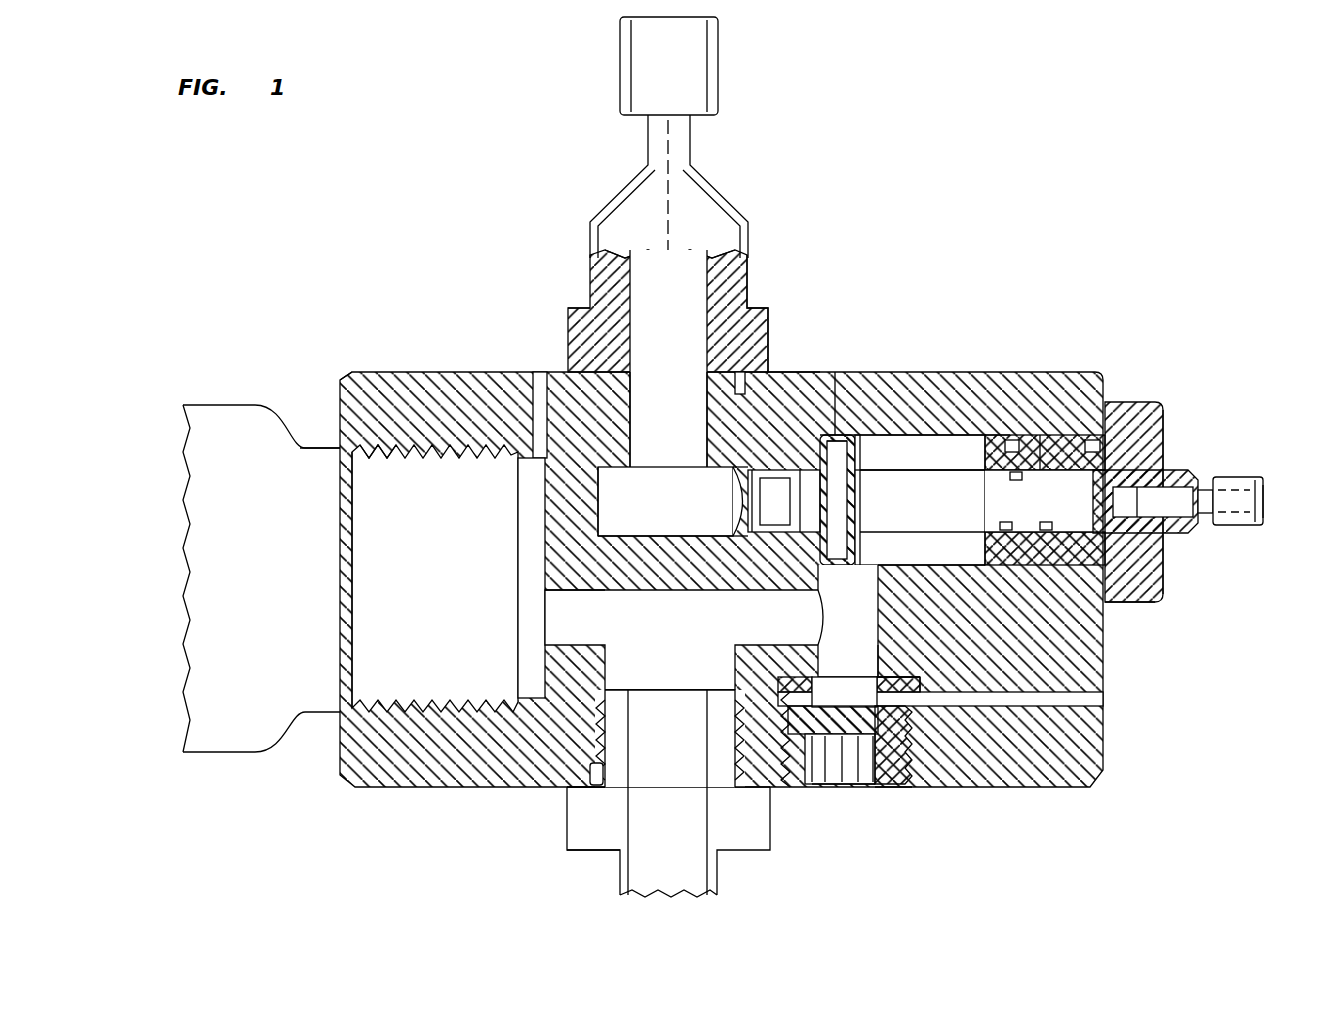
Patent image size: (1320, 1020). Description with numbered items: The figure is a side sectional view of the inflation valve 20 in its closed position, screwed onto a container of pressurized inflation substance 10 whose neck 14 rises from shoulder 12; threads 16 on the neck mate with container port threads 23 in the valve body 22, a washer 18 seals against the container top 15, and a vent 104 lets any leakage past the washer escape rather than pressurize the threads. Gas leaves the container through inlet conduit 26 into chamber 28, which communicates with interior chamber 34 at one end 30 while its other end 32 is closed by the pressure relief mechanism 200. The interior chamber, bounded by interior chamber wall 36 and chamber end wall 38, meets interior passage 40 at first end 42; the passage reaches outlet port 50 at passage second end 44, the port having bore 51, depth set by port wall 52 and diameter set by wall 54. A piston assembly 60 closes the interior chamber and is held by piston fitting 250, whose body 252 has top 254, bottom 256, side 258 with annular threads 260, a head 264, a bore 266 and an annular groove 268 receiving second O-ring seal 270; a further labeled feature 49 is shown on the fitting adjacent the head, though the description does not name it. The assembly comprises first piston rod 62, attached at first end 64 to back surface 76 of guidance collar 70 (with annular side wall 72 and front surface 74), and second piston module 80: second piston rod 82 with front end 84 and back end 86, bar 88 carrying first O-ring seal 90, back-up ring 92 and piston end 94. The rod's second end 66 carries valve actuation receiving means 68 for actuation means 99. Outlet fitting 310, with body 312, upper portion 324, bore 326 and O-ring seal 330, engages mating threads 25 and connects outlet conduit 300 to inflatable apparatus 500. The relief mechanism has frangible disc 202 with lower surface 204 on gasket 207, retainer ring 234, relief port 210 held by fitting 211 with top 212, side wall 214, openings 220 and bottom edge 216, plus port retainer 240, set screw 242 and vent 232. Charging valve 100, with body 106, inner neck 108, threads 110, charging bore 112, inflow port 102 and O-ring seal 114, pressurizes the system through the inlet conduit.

The container of pressurized inflation substance 10 is at (203, 410).
The shoulder 12 is at (268, 405).
The neck 14 is at (318, 448).
The container top 15 is at (518, 520).
The threads 16 is at (384, 458).
The washer 18 is at (520, 492).
The inflation valve 20 is at (470, 248).
The valve body 22 is at (457, 372).
The container port threads 23 is at (428, 458).
The mating threads 25 is at (600, 702).
The inlet conduit 26 is at (548, 620).
The chamber 28 is at (890, 594).
The end of chamber 30 is at (862, 582).
The other end of chamber 32 is at (880, 665).
The interior chamber 34 is at (927, 435).
The interior chamber wall 36 is at (955, 428).
The chamber end wall 38 is at (845, 432).
The interior passage 40 is at (745, 522).
The first end 42 is at (830, 436).
The passage second end 44 is at (738, 500).
The fitting shoulder 49 is at (1108, 442).
The outlet port 50 is at (650, 466).
The outlet port bore 51 is at (598, 498).
The port wall 52 is at (638, 534).
The wall 54 is at (598, 534).
The piston assembly 60 is at (905, 438).
The first piston rod 62 is at (945, 485).
The first end 64 is at (862, 440).
The first piston rod second end 66 is at (1200, 525).
The valve actuation receiving means 68 is at (1228, 477).
The guidance collar 70 is at (858, 505).
The annular side wall 72 is at (837, 500).
The front surface 74 is at (837, 459).
The back surface 76 is at (858, 488).
The second piston module 80 is at (792, 425).
The second piston rod 82 is at (812, 422).
The front end 84 is at (770, 533).
The back end 86 is at (808, 585).
The bar 88 is at (786, 475).
The first O-ring seal 90 is at (775, 501).
The back-up ring 92 is at (765, 470).
The piston end 94 is at (736, 520).
The inflation valve actuation means 99 is at (1265, 492).
The charging valve 100 is at (562, 868).
The inflow port 102 is at (625, 644).
The vent 104 is at (540, 385).
The body 106 is at (595, 852).
The inner neck 108 is at (605, 730).
The threads 110 is at (585, 762).
The charging bore 112 is at (667, 792).
The O-ring seal 114 is at (597, 788).
The pressure relief mechanism 200 is at (915, 795).
The frangible disc 202 is at (920, 696).
The lower surface 204 is at (922, 684).
The gasket 207 is at (905, 642).
The relief port 210 is at (838, 690).
The fitting 211 is at (795, 760).
The top 212 is at (890, 790).
The side wall 214 is at (914, 742).
The bottom edge 216 is at (866, 790).
The openings 220 is at (855, 678).
The vent 232 is at (1050, 708).
The retainer ring 234 is at (790, 684).
The port retainer 240 is at (775, 695).
The set screw 242 is at (840, 772).
The piston fitting 250 is at (1165, 396).
The body 252 is at (1130, 402).
The top 254 is at (1164, 426).
The bottom 256 is at (1010, 440).
The side 258 is at (1080, 447).
The annular threads 260 is at (1045, 410).
The head 264 is at (1135, 604).
The bore 266 is at (1048, 534).
The annular groove 268 is at (1003, 528).
The second O-ring seal 270 is at (1016, 481).
The outlet conduit 300 is at (655, 150).
The outlet fitting 310 is at (590, 285).
The body 312 is at (618, 320).
The upper portion 324 is at (750, 285).
The bore 326 is at (668, 256).
The O-ring seal 330 is at (632, 360).
The inflatable apparatus 500 is at (622, 40).